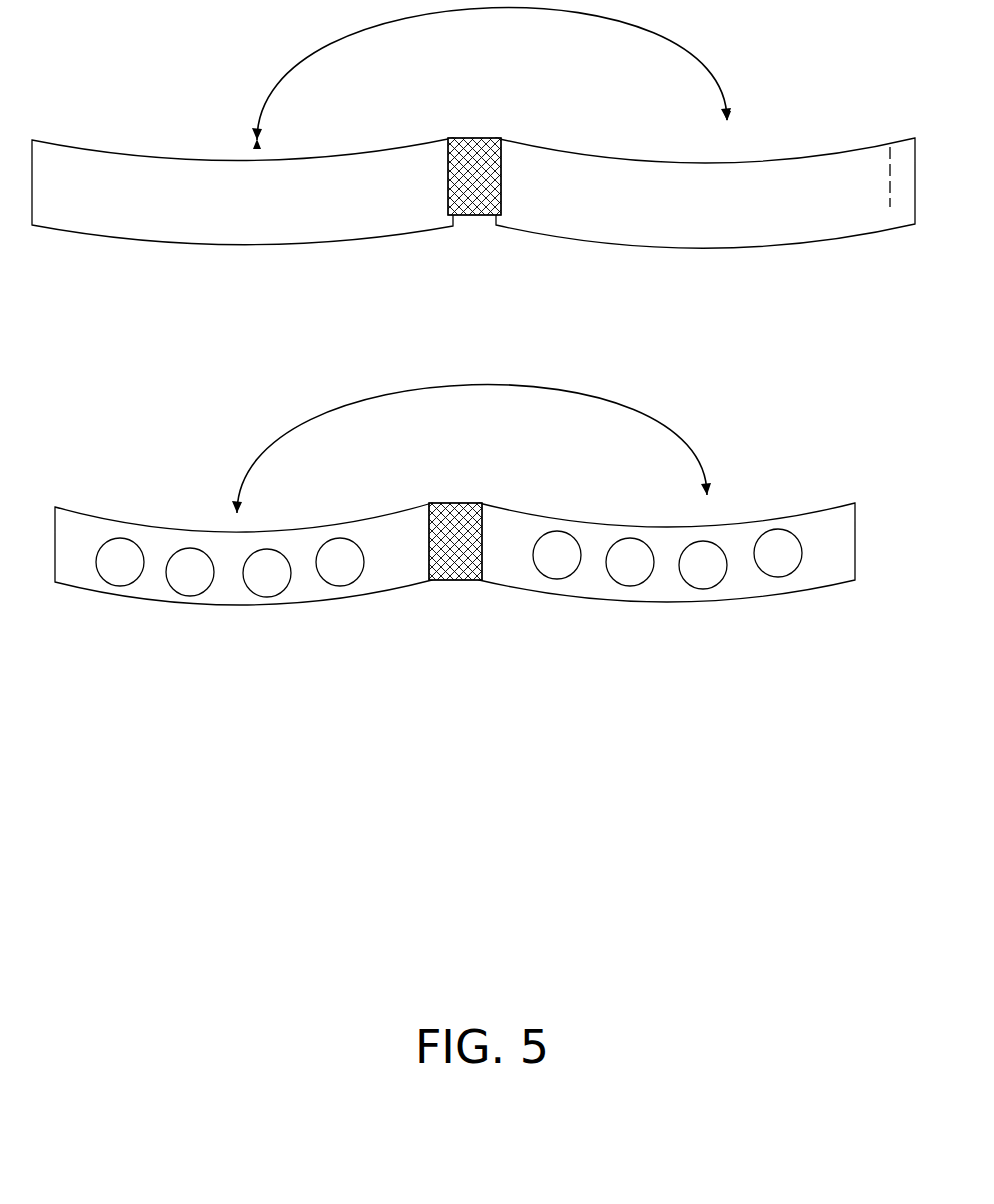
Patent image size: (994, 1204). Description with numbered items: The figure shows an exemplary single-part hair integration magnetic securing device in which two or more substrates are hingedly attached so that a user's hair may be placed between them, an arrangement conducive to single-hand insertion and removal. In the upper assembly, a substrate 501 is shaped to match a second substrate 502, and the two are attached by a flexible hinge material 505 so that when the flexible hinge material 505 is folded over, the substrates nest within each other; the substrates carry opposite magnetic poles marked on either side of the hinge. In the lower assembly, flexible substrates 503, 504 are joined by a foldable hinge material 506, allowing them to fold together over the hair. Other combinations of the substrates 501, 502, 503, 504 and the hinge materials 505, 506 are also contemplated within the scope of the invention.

The substrate 501 is at (242, 191).
The second substrate 502 is at (705, 193).
The flexible substrate 503 is at (243, 570).
The flexible substrate 504 is at (668, 570).
The flexible hinge material 505 is at (474, 160).
The foldable hinge material 506 is at (457, 561).